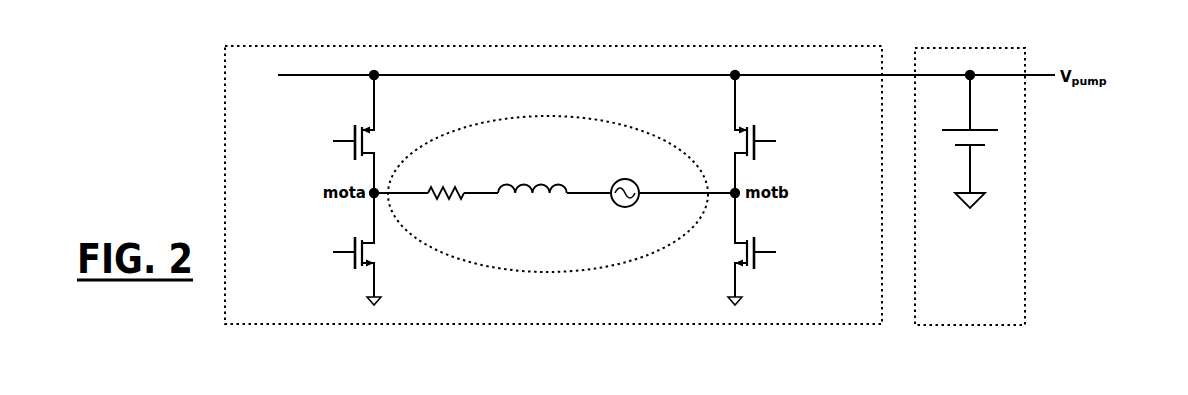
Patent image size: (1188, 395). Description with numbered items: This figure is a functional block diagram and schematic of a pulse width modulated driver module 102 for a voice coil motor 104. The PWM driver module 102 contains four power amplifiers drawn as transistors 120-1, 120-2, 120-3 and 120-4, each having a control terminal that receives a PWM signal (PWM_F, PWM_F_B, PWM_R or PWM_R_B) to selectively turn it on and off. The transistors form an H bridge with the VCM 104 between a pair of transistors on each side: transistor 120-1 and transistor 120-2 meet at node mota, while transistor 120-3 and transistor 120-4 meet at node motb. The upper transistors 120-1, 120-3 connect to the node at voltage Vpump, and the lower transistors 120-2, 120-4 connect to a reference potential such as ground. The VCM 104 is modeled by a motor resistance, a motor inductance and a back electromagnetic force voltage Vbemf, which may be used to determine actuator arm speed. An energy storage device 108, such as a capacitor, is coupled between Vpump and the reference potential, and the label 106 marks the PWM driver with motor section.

The pulse width modulated driver module 102 is at (225, 115).
The voice coil motor 104 is at (625, 257).
The PWM driver (H-bridge) 106 is at (420, 307).
The energy storage device 108 is at (1025, 163).
The transistor 120-1 is at (376, 129).
The transistor 120-2 is at (376, 244).
The transistor 120-3 is at (733, 129).
The transistor 120-4 is at (733, 242).